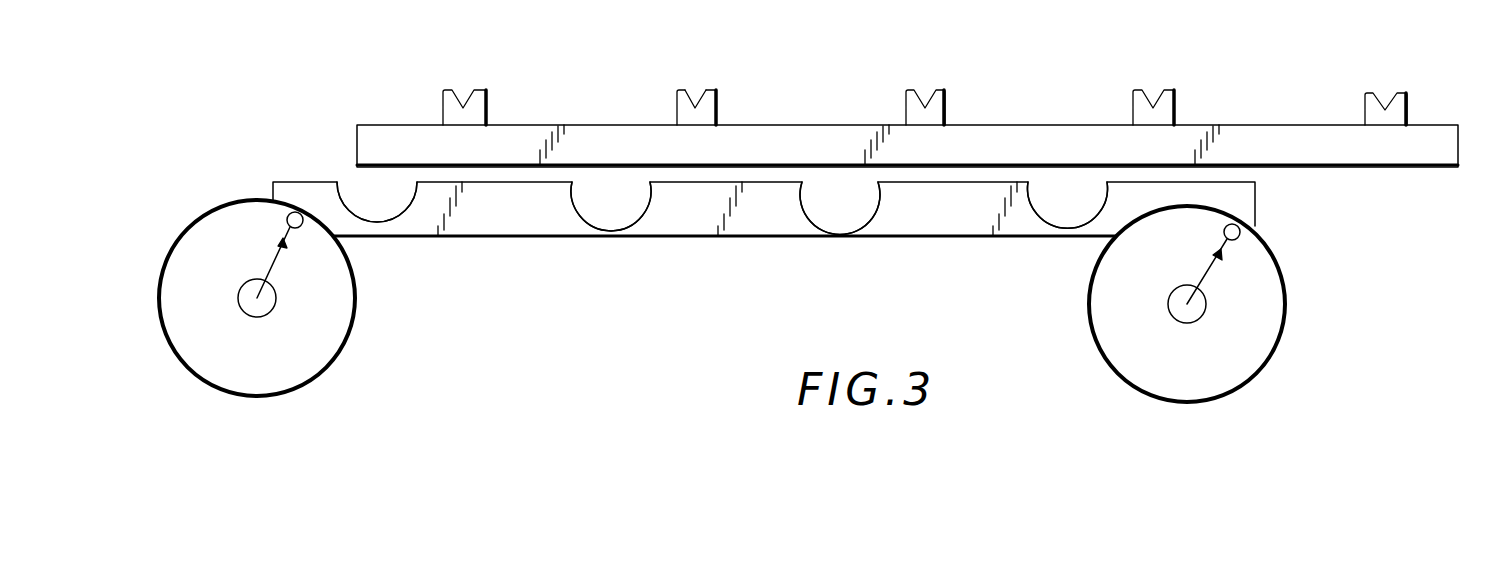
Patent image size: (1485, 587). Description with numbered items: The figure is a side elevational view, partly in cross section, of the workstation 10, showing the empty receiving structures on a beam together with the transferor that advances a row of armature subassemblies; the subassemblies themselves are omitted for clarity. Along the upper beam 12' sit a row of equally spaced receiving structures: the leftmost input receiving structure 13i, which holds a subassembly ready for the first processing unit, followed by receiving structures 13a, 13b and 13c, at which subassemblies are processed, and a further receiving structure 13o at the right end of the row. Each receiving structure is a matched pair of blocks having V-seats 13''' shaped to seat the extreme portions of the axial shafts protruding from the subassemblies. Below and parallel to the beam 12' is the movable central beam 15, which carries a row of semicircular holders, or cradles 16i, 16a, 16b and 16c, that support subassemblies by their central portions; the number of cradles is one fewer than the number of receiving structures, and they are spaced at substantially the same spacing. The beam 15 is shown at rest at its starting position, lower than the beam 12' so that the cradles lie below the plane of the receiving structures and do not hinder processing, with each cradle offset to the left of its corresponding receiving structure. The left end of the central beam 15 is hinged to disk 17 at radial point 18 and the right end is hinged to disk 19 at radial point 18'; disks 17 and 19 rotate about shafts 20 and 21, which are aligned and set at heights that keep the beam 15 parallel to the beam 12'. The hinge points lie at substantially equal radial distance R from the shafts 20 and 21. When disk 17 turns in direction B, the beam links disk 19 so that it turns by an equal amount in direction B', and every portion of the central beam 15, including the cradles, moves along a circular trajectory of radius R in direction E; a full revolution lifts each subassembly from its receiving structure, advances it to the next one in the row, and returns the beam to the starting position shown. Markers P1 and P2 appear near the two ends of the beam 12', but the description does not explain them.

The workstation 10 is at (907, 114).
The beam 12' is at (907, 176).
The leftmost receiving structure 13i is at (487, 106).
The V-seats 13''' is at (697, 68).
The receiving structure 13a is at (717, 106).
The receiving structure 13b is at (945, 106).
The receiving structure 13c is at (1175, 106).
The receiving structure 13o is at (1365, 117).
The central beam 15 is at (1245, 207).
The cradle 16i is at (372, 202).
The cradle 16a is at (614, 214).
The cradle 16b is at (838, 214).
The cradle 16c is at (1052, 212).
The disk 17 is at (318, 381).
The radial point 18 is at (251, 192).
The radial point 18' is at (1292, 252).
The disk 19 is at (1270, 354).
The shaft 20 is at (273, 311).
The shaft 21 is at (1207, 312).
The radial distance R is at (280, 256).
The direction of rotation B is at (223, 309).
The direction of rotation B' is at (1104, 307).
The direction of beam movement E is at (622, 261).
The position one P1 is at (422, 62).
The position two P2 is at (1378, 57).